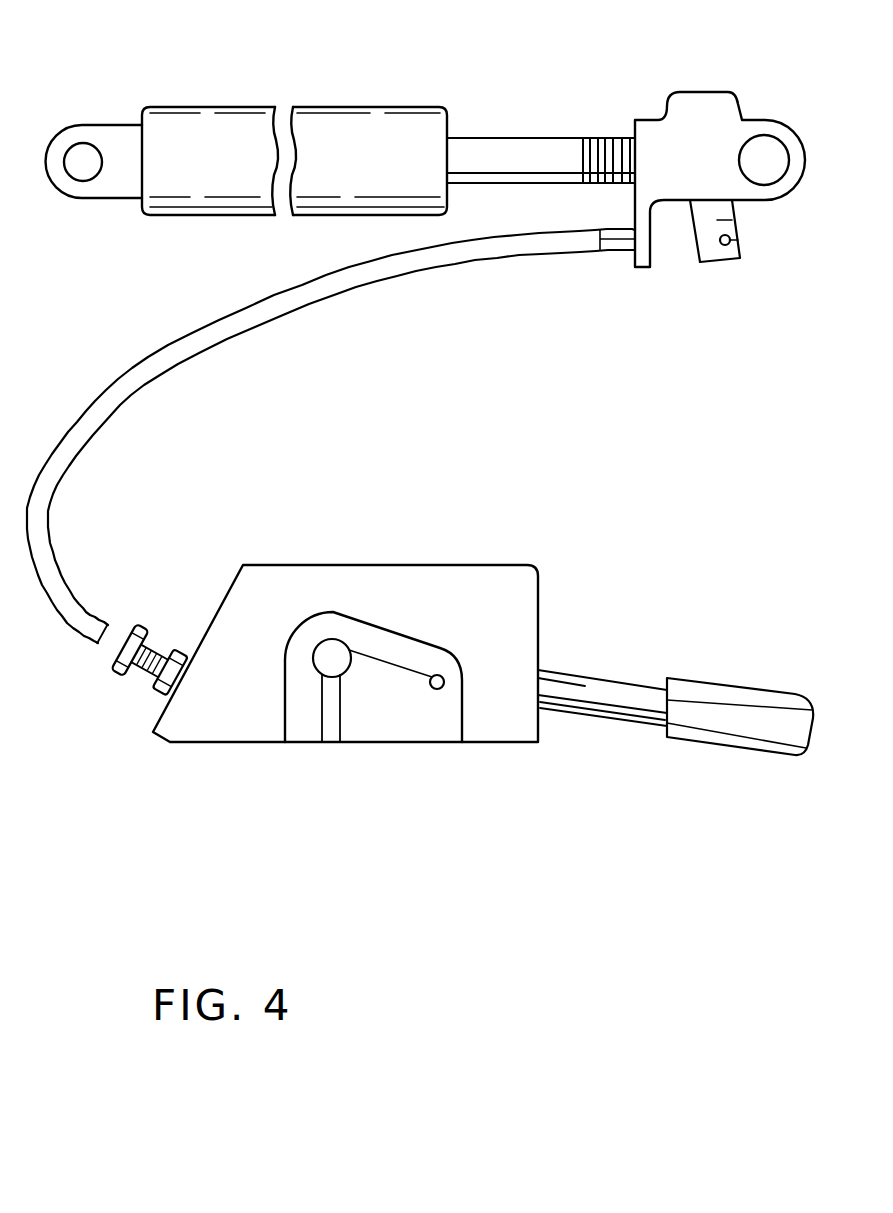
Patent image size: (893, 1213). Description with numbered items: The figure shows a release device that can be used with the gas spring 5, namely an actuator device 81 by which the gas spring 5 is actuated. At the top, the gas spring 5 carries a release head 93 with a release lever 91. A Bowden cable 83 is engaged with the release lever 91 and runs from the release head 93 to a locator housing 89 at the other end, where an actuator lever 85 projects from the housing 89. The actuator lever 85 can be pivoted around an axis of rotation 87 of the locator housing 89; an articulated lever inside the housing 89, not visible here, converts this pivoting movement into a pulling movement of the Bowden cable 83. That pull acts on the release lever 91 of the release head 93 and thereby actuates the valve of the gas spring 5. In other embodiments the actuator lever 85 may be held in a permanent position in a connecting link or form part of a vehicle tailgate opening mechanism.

The gas spring 5 is at (352, 133).
The release head 93 is at (703, 130).
The release lever 91 is at (733, 222).
The Bowden cable 83 is at (158, 352).
The locator housing 89 is at (407, 587).
The axis of rotation 87 is at (334, 664).
The actuator lever 85 is at (600, 688).
The actuator device 81 is at (445, 932).